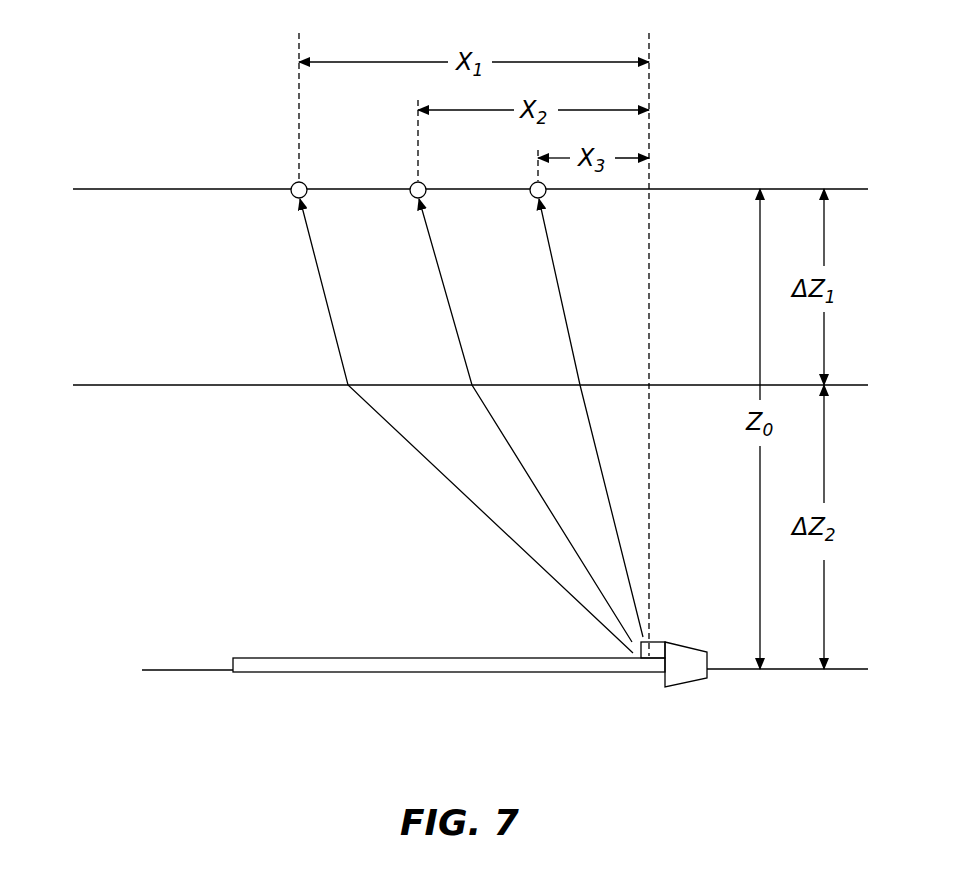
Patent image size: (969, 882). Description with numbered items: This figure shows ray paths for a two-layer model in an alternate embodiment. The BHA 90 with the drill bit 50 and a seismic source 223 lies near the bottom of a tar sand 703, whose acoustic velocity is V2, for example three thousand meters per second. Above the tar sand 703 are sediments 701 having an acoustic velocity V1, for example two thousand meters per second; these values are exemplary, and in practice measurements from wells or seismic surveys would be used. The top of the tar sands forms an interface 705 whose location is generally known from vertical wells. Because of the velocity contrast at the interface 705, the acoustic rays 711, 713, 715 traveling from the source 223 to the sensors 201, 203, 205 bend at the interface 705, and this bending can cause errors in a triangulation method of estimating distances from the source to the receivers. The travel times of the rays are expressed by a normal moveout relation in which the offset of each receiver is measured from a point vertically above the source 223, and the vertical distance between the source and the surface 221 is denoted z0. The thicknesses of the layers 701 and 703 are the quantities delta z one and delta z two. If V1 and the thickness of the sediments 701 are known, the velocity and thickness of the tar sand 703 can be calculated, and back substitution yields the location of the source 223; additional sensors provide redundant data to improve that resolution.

The surface 221 is at (130, 183).
The interface 705 is at (182, 383).
The sediments 701 is at (90, 289).
The tar sand 703 is at (90, 526).
The sensor 201 is at (293, 183).
The sensor 203 is at (412, 183).
The sensor 205 is at (532, 183).
The acoustic ray 711 is at (315, 272).
The acoustic ray 713 is at (437, 272).
The acoustic ray 715 is at (551, 272).
The BHA 90 is at (472, 674).
The seismic source 223 is at (660, 660).
The drill bit 50 is at (683, 688).